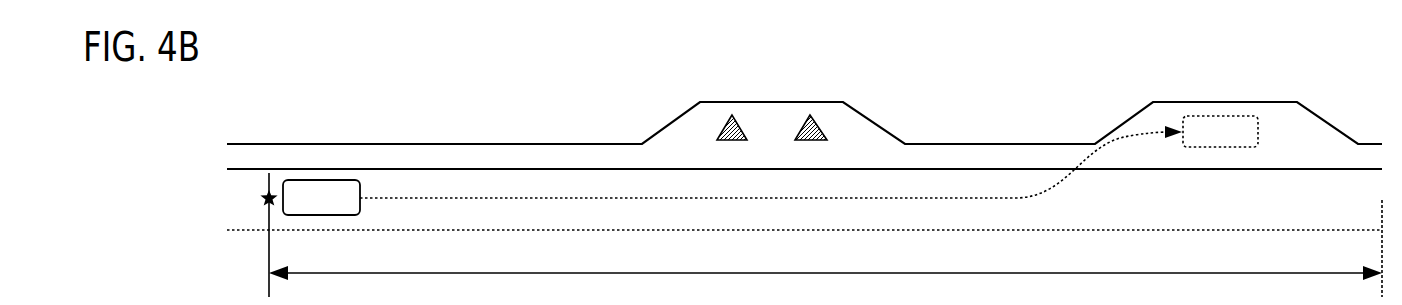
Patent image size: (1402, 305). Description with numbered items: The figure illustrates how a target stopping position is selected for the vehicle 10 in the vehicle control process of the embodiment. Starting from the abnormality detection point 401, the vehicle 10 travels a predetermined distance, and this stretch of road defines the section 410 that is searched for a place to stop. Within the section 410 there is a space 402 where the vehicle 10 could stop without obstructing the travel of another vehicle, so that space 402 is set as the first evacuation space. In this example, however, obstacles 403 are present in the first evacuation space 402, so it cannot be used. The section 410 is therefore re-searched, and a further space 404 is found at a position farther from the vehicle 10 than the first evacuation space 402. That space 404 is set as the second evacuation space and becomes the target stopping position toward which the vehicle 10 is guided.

The vehicle 10 is at (322, 180).
The abnormality detection point 401 is at (268, 172).
The first evacuation space 402 is at (838, 100).
The obstacles 403 is at (803, 128).
The second evacuation space 404 is at (1290, 100).
The section 410 is at (825, 285).